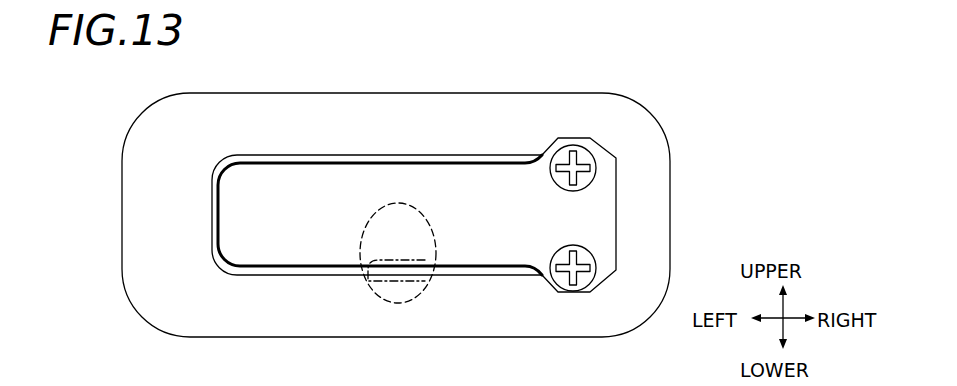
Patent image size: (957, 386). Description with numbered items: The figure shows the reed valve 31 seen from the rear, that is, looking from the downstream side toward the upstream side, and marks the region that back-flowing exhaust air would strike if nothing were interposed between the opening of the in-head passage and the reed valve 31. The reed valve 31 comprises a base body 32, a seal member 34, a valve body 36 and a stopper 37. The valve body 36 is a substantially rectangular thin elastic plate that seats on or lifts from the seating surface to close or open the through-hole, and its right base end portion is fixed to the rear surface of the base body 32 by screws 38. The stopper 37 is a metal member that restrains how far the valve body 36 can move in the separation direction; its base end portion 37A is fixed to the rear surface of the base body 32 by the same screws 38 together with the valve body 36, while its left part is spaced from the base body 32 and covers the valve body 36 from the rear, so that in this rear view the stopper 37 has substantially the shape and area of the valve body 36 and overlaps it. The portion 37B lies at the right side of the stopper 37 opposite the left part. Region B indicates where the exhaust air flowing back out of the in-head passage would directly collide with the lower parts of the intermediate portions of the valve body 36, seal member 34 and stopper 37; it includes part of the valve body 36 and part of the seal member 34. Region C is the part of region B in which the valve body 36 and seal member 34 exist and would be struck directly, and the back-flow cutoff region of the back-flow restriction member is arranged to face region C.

The reed valve 31 is at (649, 77).
The base body 32 is at (170, 118).
The seal member 34 is at (263, 155).
The valve body 36 is at (300, 162).
The stopper 37 is at (340, 180).
The base end portion of the stopper 37A is at (243, 218).
The right portion of bottom 37B is at (597, 215).
The screws 38 is at (574, 145).
The region B is at (437, 248).
The region C is at (400, 282).